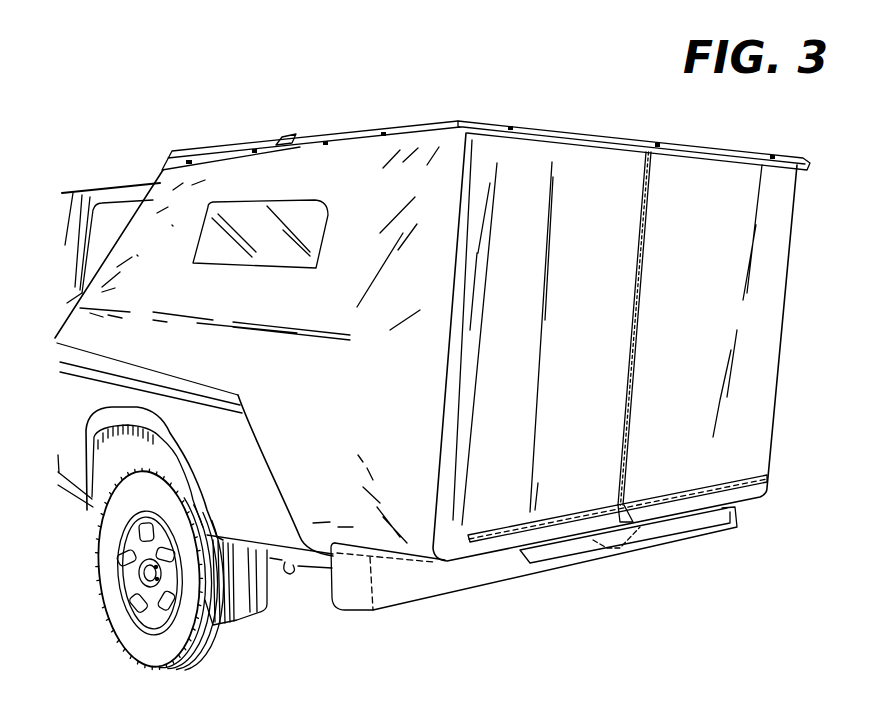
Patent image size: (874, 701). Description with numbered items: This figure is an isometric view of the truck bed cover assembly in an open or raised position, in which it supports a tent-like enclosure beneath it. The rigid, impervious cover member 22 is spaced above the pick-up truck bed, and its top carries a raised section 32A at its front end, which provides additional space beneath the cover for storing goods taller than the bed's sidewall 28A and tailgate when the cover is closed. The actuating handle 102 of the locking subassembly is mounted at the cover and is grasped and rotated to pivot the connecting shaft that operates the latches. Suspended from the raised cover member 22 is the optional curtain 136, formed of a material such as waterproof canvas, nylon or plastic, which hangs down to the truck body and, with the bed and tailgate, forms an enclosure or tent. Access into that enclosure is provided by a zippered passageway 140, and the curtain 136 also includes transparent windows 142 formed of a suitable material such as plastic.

The cover member 22 is at (428, 122).
The raised section 32A is at (203, 148).
The actuating handle 102 is at (290, 138).
The curtain 136 is at (417, 203).
The transparent window 142 is at (270, 255).
The zippered passageway 140 is at (632, 412).
The sidewall 28A is at (244, 505).